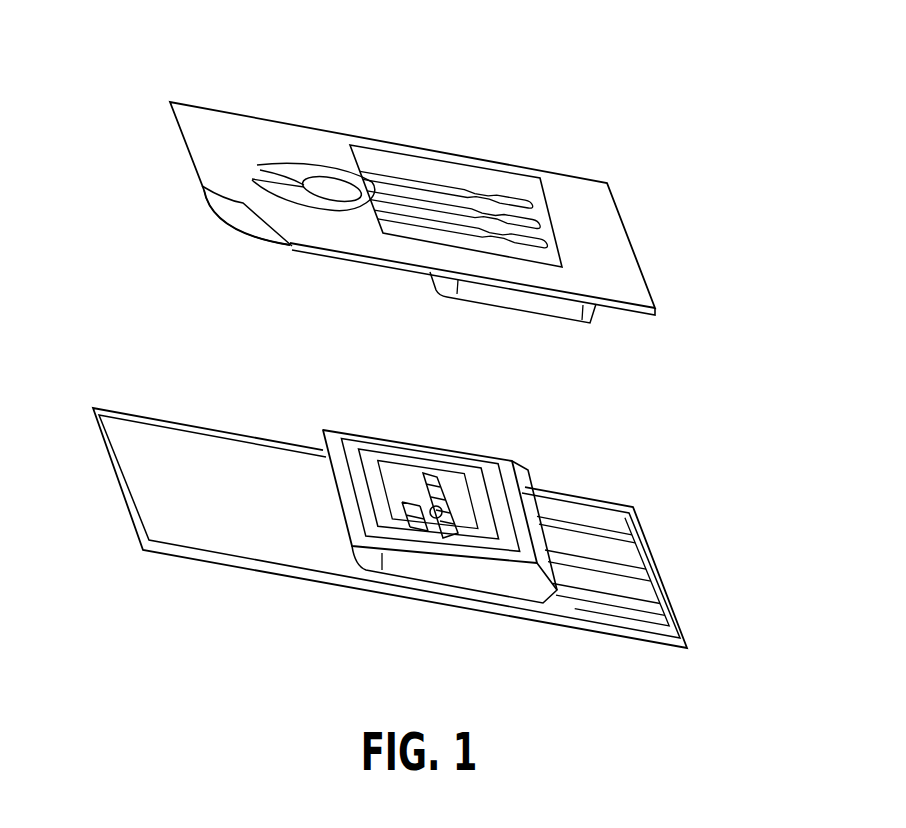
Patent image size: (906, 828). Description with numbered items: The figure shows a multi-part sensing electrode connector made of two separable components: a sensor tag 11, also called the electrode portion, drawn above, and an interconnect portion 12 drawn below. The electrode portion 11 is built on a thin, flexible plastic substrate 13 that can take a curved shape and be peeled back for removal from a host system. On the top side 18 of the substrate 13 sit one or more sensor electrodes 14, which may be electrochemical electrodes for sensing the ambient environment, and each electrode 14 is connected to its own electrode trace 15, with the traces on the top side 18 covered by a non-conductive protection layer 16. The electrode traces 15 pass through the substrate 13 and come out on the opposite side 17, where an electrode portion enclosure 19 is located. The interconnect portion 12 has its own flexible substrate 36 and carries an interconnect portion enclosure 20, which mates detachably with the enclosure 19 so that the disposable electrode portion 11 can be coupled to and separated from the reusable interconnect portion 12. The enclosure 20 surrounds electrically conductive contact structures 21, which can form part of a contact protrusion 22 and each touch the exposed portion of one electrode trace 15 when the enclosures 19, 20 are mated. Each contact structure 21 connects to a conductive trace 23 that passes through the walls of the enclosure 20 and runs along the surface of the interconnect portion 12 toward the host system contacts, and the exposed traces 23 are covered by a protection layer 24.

The sensor tag 11 is at (707, 90).
The interconnect portion 12 is at (707, 395).
The substrate 13 is at (190, 104).
The electrodes 14 is at (333, 187).
The electrode trace 15 is at (403, 220).
The protection layer 16 is at (450, 173).
The opposite side 17 is at (200, 222).
The top side 18 is at (253, 92).
The electrode portion enclosure 19 is at (592, 312).
The interconnect portion enclosure 20 is at (328, 432).
The contact structure 21 is at (444, 506).
The contact protrusion 22 is at (428, 472).
The conductive traces 23 is at (408, 500).
The protection layer 24 is at (593, 522).
The substrate 36 is at (137, 420).